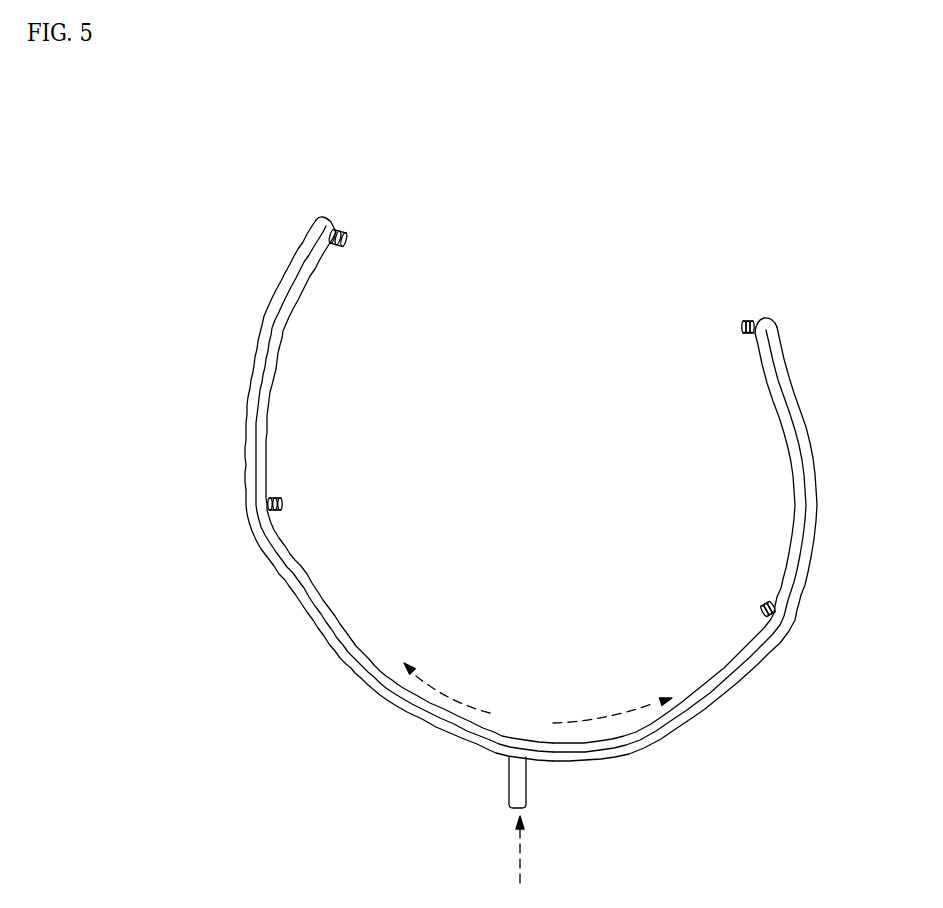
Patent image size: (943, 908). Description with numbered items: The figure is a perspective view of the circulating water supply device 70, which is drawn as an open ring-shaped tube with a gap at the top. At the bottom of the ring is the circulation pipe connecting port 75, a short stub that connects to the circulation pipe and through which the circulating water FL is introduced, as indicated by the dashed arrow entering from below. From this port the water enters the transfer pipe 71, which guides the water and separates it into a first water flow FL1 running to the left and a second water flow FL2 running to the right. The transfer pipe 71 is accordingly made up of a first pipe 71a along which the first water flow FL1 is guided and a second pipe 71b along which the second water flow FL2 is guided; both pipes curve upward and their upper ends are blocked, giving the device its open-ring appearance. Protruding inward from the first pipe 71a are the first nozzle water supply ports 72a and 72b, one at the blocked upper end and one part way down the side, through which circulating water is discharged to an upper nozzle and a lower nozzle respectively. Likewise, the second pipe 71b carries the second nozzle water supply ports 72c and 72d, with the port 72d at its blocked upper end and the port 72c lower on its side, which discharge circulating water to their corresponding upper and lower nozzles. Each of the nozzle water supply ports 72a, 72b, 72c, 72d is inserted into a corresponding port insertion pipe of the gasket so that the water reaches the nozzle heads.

The circulating water supply device 70 is at (257, 201).
The transfer pipe 71 is at (527, 625).
The first pipe 71a is at (325, 638).
The second pipe 71b is at (608, 758).
The first nozzle water supply port 72a is at (347, 238).
The first nozzle water supply port 72b is at (283, 503).
The second nozzle water supply port 72c is at (762, 606).
The second nozzle water supply port 72d is at (743, 326).
The circulation pipe connecting port 75 is at (526, 783).
The circulating water FL is at (533, 849).
The first water flow FL1 is at (448, 688).
The second water flow FL2 is at (612, 703).